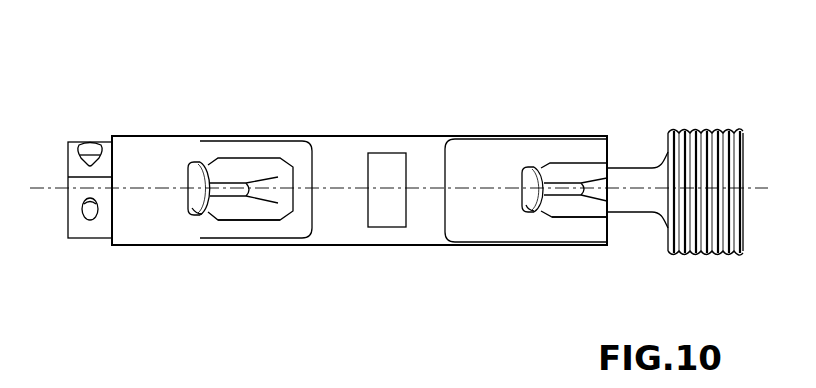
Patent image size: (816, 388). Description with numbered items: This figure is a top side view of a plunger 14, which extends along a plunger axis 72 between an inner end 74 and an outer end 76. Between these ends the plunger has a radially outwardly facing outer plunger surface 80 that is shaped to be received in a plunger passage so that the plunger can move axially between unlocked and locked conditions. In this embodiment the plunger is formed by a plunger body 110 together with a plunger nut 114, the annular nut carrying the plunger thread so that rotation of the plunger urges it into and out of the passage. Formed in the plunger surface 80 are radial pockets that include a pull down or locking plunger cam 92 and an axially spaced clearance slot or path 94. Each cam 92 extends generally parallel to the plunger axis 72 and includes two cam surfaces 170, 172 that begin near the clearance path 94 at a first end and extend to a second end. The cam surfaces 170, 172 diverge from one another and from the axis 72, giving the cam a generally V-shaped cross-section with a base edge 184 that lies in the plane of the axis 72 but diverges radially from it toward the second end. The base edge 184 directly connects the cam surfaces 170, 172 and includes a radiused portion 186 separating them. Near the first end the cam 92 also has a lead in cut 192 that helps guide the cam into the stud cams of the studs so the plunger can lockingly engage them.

The plunger 14 is at (668, 58).
The plunger axis 72 is at (758, 192).
The inner end 74 is at (68, 227).
The outer end 76 is at (691, 203).
The outer plunger surface 80 is at (372, 152).
The locking plunger cam 92 is at (232, 182).
The clearance slot or path 94 is at (148, 152).
The plunger body 110 is at (580, 253).
The plunger nut 114 is at (718, 257).
The cam surface 170 is at (221, 172).
The cam surface 172 is at (243, 207).
The base edge 184 is at (250, 187).
The radiused portion 186 is at (192, 208).
The lead in cut 192 is at (202, 172).